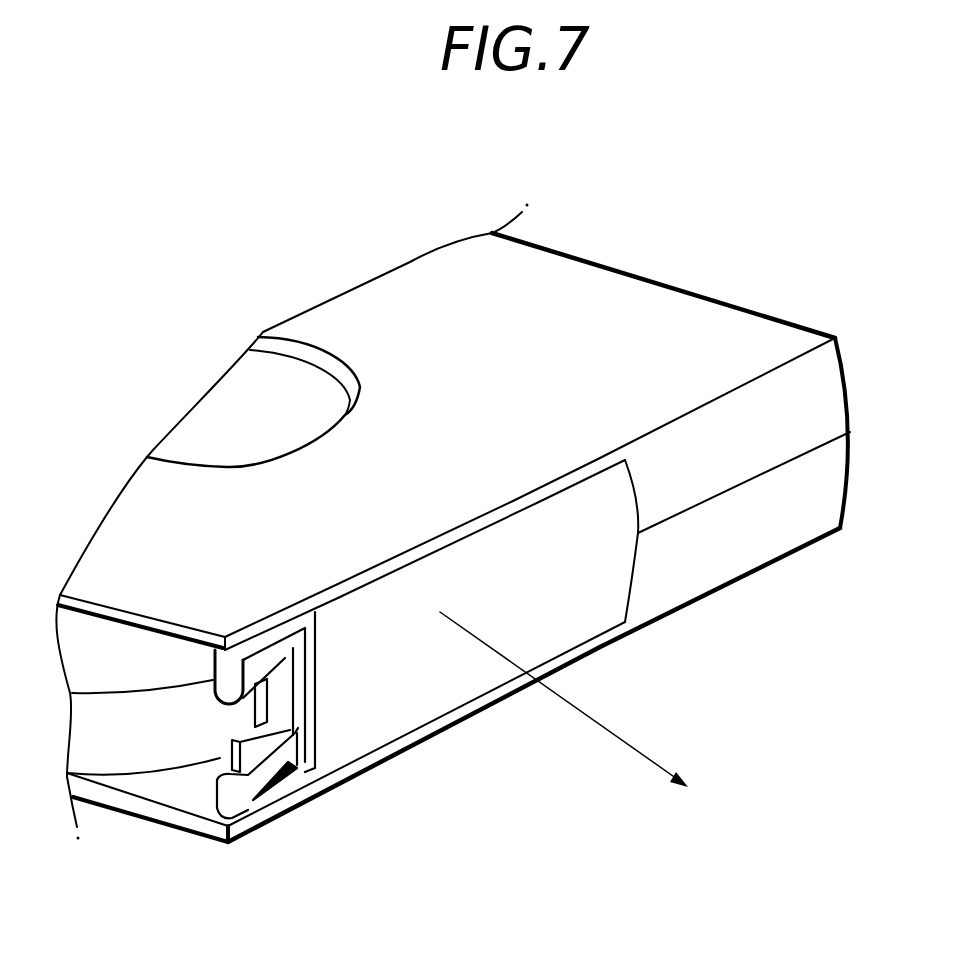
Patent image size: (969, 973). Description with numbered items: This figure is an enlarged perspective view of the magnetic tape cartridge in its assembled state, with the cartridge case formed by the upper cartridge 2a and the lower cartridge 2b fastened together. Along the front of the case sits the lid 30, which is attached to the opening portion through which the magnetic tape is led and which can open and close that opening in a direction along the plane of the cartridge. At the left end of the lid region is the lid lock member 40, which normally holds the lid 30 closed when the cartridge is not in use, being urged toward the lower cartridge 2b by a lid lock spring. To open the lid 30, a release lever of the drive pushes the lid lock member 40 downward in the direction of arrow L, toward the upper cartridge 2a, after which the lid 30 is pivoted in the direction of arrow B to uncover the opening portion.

The upper cartridge 2a is at (795, 505).
The lower cartridge 2b is at (792, 387).
The lid 30 is at (548, 612).
The lid lock member 40 is at (288, 681).
The arrow L is at (240, 714).
The arrow B is at (564, 699).